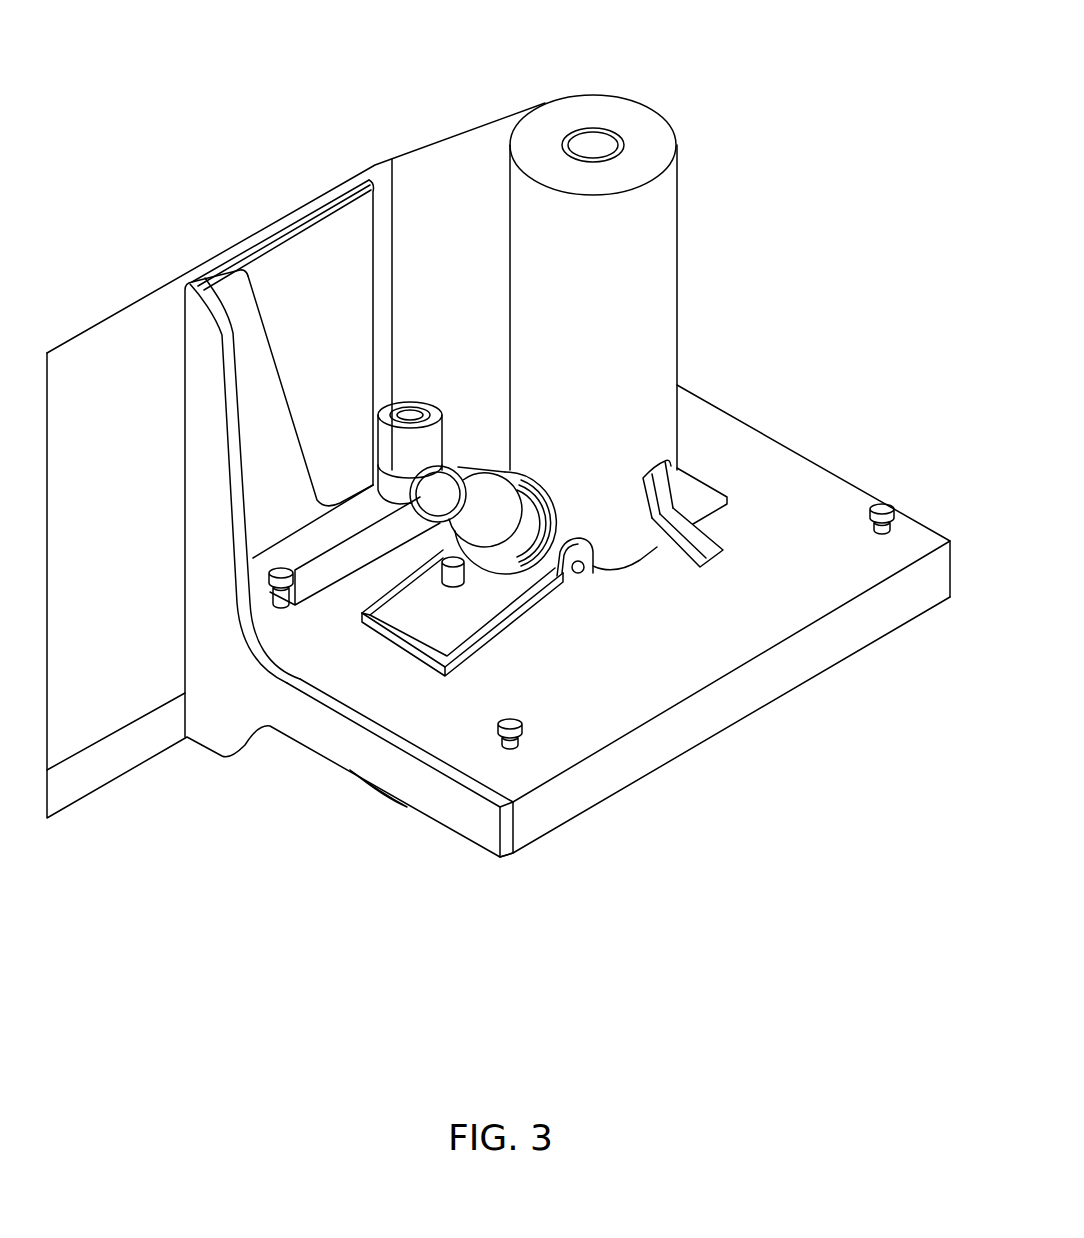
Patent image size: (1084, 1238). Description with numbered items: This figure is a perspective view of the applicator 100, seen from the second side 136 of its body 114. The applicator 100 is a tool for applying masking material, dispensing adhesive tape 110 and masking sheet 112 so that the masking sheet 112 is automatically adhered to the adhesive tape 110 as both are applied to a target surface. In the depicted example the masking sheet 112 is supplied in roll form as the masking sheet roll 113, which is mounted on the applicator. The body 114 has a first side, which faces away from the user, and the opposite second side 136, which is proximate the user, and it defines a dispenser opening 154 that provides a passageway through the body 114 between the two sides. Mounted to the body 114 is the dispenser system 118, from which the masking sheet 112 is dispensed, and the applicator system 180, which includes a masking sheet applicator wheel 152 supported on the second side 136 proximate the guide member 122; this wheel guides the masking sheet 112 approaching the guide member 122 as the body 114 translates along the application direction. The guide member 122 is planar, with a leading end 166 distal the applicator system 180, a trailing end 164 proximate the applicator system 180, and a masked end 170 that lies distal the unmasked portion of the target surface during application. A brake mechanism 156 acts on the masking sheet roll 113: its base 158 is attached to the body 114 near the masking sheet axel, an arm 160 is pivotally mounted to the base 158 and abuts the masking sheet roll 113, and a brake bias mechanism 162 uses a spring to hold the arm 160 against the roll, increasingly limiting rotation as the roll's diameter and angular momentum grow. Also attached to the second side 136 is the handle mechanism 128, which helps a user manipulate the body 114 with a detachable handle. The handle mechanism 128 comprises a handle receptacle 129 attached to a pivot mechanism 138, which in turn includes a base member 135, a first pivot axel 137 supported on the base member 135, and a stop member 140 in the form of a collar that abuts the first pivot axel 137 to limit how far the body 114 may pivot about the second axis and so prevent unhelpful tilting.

The applicator 100 is at (784, 85).
The adhesive tape 110 is at (112, 760).
The masking sheet 112 is at (97, 353).
The masking sheet roll 113 is at (660, 228).
The body 114 is at (752, 443).
The dispenser system 118 is at (708, 333).
The guide member 122 is at (287, 293).
The handle mechanism 128 is at (520, 628).
The handle receptacle 129 is at (474, 497).
The base member 135 is at (430, 638).
The second side 136 is at (612, 718).
The first pivot axel 137 is at (581, 572).
The pivot mechanism 138 is at (396, 656).
The stop member 140 is at (508, 480).
The masking sheet applicator wheel 152 is at (443, 435).
The dispenser opening 154 is at (713, 487).
The brake mechanism 156 is at (663, 514).
The base 158 is at (703, 552).
The arm 160 is at (658, 465).
The brake bias mechanism 162 is at (645, 507).
The trailing end 164 is at (185, 420).
The leading end 166 is at (373, 183).
The masked end 170 is at (277, 233).
The applicator system 180 is at (422, 381).